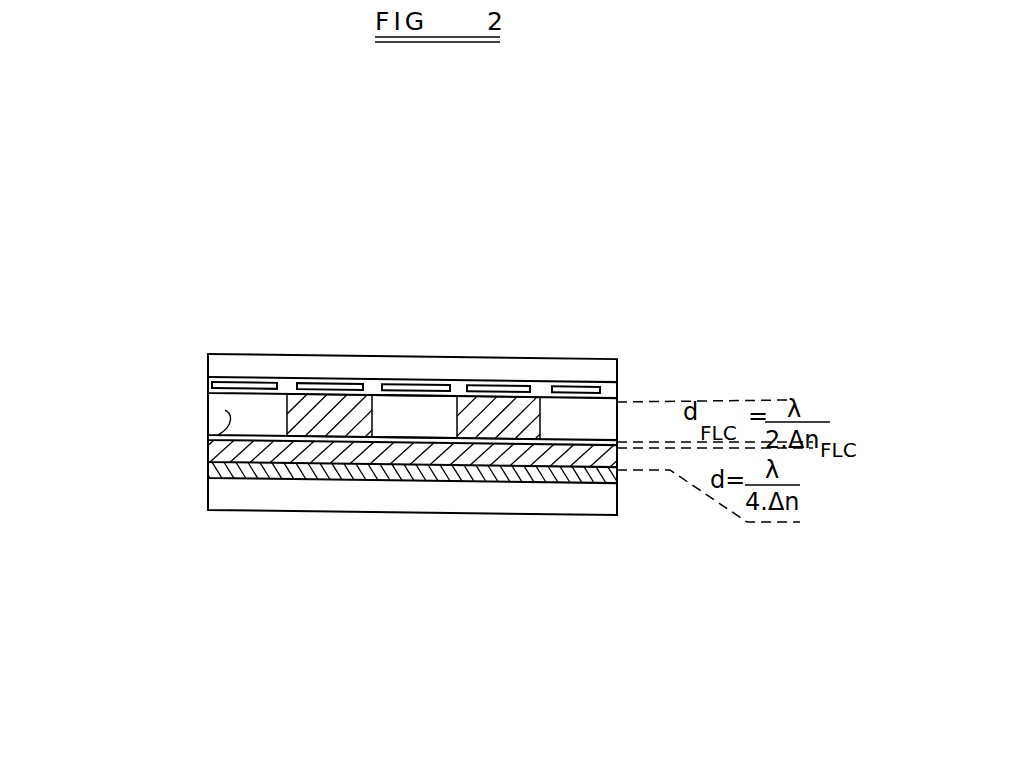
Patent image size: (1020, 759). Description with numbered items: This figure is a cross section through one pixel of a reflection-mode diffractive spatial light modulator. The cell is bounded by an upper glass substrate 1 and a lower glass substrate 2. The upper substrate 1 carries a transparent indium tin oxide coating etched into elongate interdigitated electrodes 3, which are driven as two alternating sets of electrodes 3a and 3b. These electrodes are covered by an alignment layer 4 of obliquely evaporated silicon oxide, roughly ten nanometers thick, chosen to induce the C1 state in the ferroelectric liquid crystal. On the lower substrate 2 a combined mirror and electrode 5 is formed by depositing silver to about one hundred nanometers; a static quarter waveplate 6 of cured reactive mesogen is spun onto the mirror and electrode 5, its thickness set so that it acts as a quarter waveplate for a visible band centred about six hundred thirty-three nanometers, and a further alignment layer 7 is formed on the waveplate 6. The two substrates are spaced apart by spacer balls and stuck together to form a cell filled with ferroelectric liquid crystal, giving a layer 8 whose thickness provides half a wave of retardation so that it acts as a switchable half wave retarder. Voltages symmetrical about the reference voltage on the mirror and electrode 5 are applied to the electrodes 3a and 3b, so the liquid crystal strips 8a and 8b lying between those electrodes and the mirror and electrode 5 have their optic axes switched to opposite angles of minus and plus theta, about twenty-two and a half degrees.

The upper glass substrate 1 is at (617, 362).
The lower glass substrate 2 is at (607, 500).
The elongate interdigitated electrodes 3 is at (381, 283).
The interdigitated electrode 3a is at (487, 388).
The interdigitated electrode 3b is at (432, 388).
The alignment layer 4 is at (617, 385).
The combined mirror and electrode 5 is at (579, 478).
The static quarter waveplate 6 is at (476, 453).
The further alignment layer 7 is at (340, 440).
The ferroelectric liquid crystal layer 8 is at (218, 435).
The ferroelectric liquid crystal material strip 8a is at (515, 412).
The ferroelectric liquid crystal material strip 8b is at (391, 409).